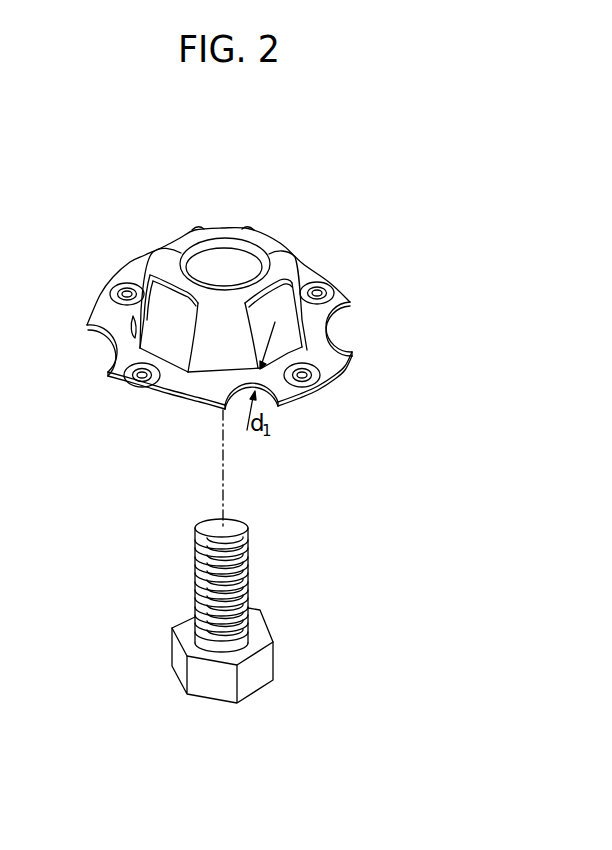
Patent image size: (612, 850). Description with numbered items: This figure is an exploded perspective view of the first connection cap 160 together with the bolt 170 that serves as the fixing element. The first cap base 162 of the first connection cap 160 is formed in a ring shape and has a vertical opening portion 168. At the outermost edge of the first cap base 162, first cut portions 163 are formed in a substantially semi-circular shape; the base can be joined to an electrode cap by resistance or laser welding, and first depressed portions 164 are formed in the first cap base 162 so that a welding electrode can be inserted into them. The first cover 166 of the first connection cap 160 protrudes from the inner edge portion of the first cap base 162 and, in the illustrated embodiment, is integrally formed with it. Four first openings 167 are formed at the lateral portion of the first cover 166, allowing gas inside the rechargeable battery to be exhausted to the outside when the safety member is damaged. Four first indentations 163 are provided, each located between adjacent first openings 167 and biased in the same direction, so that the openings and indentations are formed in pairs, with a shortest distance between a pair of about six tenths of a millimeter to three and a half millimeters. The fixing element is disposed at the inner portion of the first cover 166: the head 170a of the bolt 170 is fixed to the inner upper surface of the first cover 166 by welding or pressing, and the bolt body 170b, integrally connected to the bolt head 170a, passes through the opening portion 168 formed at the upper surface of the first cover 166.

The first connection cap 160 is at (261, 297).
The first cap base 162 is at (342, 297).
The first cut portion 163 is at (233, 397).
The first depressed portion 164 is at (325, 283).
The first cover 166 is at (178, 248).
The first opening 167 is at (325, 378).
The opening portion 168 is at (222, 261).
The bolt 170 is at (229, 611).
The bolt head 170a is at (177, 662).
The bolt body 170b is at (203, 573).